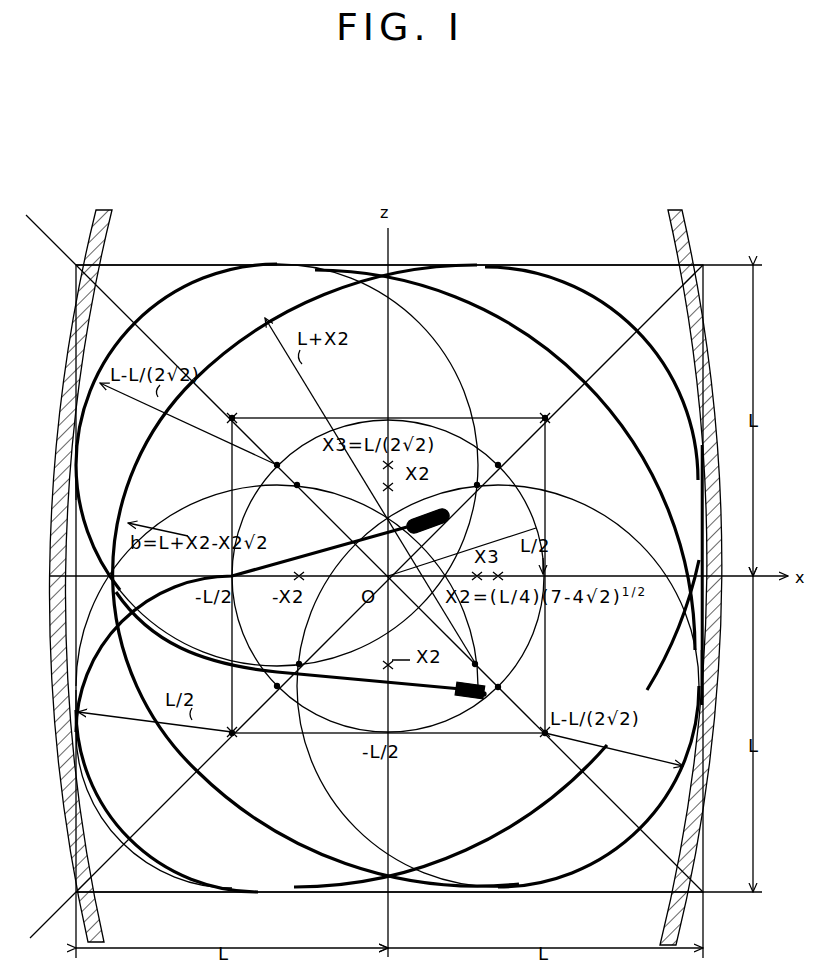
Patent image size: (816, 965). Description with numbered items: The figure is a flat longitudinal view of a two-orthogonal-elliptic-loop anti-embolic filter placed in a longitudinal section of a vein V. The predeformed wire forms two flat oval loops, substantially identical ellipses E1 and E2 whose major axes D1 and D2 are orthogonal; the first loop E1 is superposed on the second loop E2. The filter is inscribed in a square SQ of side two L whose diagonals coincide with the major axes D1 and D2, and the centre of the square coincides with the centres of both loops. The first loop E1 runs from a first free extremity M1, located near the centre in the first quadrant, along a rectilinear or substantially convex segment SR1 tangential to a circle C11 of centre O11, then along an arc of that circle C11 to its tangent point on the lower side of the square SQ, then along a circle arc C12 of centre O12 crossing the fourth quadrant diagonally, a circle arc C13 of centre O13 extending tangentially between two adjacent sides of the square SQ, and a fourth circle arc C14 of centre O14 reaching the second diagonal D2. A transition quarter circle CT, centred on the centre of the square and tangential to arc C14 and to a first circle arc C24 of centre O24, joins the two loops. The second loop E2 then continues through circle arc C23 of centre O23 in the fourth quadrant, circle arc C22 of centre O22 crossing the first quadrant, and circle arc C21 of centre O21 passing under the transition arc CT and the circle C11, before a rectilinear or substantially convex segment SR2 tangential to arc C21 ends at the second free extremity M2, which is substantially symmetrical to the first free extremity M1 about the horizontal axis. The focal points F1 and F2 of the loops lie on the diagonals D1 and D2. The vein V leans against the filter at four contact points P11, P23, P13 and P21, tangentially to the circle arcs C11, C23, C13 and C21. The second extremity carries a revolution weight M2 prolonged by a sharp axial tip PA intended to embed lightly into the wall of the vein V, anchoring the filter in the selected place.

The circle C11 is at (122, 868).
The circle arc C12 is at (560, 800).
The circle arc C13 is at (627, 309).
The fourth circle arc C14 is at (242, 336).
The circle arc C21 is at (148, 308).
The circle arc C22 is at (616, 406).
The circle arc C23 is at (642, 856).
The first circle arc C24 is at (205, 800).
The centre O11 is at (272, 712).
The centre O12 is at (294, 488).
The centre O13 is at (498, 461).
The centre O14 is at (478, 662).
The centre O21 is at (272, 461).
The centre O22 is at (294, 662).
The centre O23 is at (500, 686).
The centre O24 is at (477, 485).
The contact point P11 is at (80, 753).
The contact point P13 is at (700, 488).
The contact point P21 is at (78, 482).
The contact point P23 is at (696, 680).
The transition arc CT is at (123, 644).
The rectilinear or substantially convex segment SR1 is at (335, 550).
The rectilinear or substantially convex segment SR2 is at (340, 682).
The first free extremity M1 is at (422, 520).
The second free extremity M2 is at (462, 702).
The sharp axial tip PA is at (489, 700).
The focal point F1 is at (548, 420).
The focal point F2 is at (234, 418).
The first loop E1 is at (323, 925).
The second loop E2 is at (292, 222).
The square SQ is at (594, 264).
The vein V is at (385, 567).
The major axis D1 is at (365, 613).
The major axis D2 is at (383, 588).